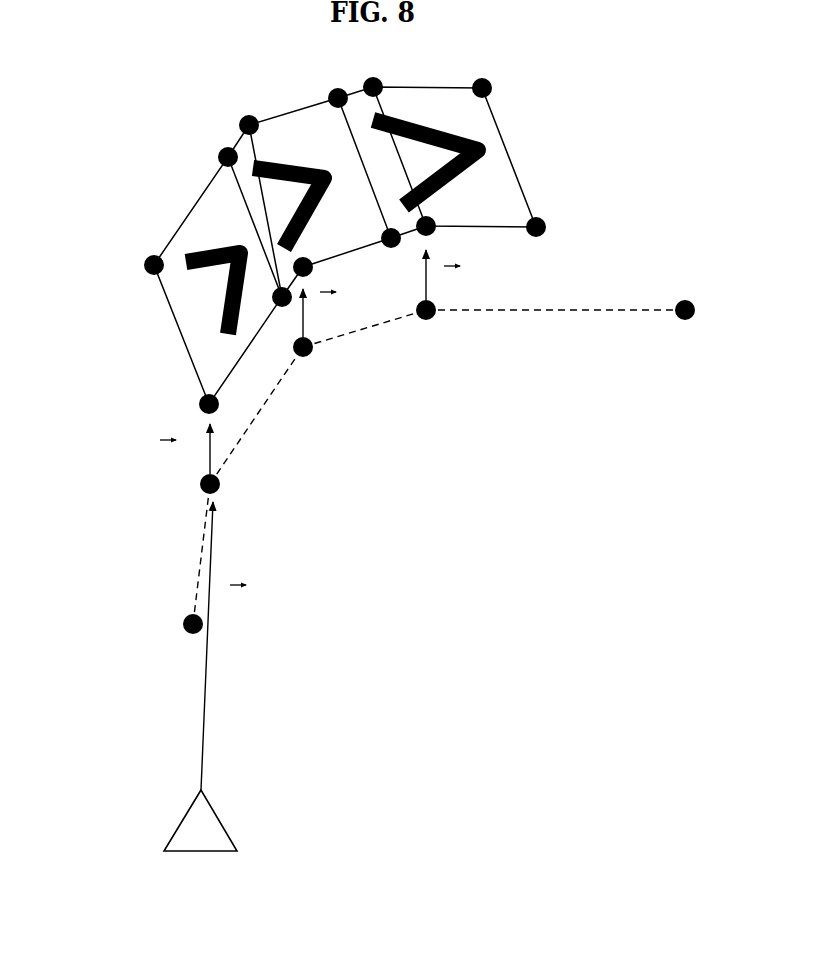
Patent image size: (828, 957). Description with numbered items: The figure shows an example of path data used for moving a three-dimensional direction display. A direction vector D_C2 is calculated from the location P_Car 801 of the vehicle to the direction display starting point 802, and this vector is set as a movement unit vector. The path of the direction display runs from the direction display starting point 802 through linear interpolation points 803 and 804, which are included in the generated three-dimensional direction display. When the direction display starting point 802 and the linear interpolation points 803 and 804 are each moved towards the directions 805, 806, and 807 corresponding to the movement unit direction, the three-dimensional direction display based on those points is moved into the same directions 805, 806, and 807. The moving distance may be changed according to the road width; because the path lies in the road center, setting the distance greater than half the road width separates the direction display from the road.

The location P_Car of a vehicle 801 is at (220, 818).
The direction display starting point 802 is at (220, 482).
The linear interpolation point 803 is at (303, 357).
The linear interpolation point 804 is at (426, 320).
The direction corresponding to the movement unit direction 805 is at (200, 398).
The direction corresponding to the movement unit direction 806 is at (315, 268).
The direction corresponding to the movement unit direction 807 is at (434, 232).